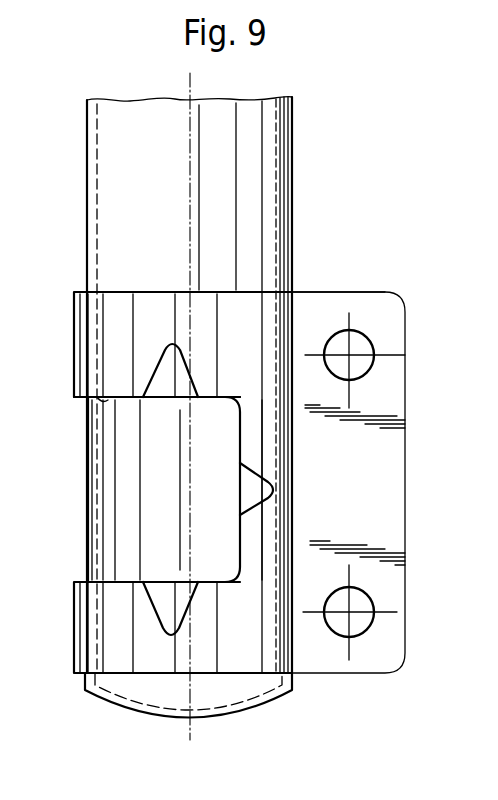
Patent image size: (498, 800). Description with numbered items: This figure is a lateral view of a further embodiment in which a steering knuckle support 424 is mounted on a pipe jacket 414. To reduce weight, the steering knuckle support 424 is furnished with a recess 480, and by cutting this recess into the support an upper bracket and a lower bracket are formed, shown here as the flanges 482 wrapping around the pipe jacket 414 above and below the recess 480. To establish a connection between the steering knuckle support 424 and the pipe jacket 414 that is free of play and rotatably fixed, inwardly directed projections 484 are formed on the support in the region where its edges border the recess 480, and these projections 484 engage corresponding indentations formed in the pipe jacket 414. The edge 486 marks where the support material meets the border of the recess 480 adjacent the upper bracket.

The pipe jacket 414 is at (103, 172).
The steering knuckle support 424 is at (390, 488).
The recess 480 is at (122, 488).
The clamp flanges 482 is at (84, 320).
The inwardly directed projections 484 is at (166, 353).
The slot edge 486 is at (108, 398).